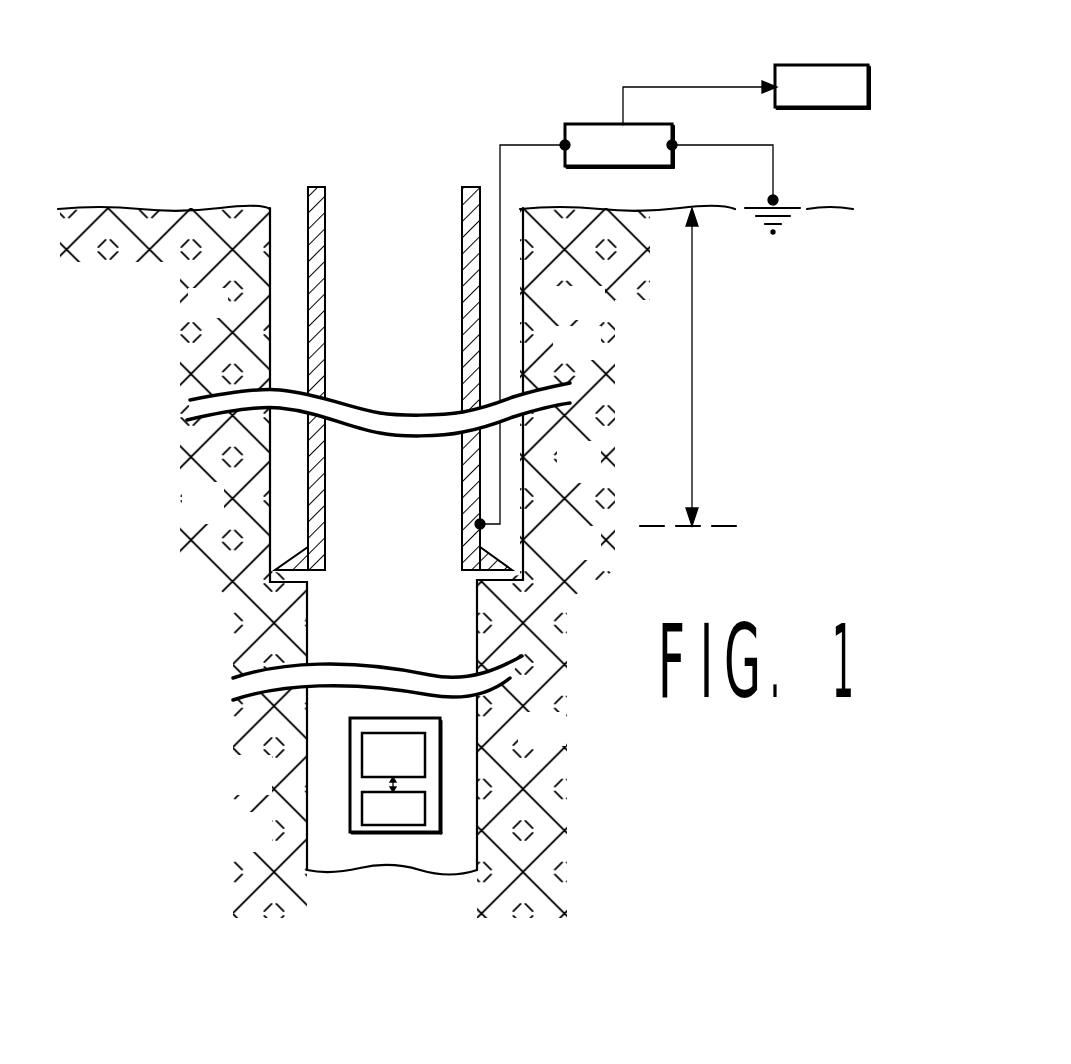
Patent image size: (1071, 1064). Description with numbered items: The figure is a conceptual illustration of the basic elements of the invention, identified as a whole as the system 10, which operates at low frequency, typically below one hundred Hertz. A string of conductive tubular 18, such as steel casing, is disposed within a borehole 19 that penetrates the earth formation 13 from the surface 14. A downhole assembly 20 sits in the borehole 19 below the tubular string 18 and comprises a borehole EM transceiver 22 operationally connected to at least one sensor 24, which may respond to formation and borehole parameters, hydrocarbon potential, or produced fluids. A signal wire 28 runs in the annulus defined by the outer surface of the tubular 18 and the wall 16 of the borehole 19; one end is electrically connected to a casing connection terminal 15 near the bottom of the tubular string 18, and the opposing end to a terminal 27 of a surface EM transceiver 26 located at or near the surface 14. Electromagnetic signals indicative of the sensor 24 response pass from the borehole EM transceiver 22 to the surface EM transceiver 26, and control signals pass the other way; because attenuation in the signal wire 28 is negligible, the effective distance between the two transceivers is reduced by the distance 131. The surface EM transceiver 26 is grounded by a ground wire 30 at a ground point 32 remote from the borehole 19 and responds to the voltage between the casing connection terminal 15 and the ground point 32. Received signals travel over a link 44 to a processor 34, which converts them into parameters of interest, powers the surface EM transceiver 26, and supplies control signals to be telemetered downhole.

The system 10 is at (572, 83).
The earth formation 13 is at (218, 519).
The surface 14 is at (155, 208).
The casing connection terminal 15 is at (487, 528).
The wall of the borehole 16 is at (272, 240).
The tubular string 18 is at (308, 320).
The borehole 19 is at (298, 469).
The downhole assembly 20 is at (393, 781).
The borehole EM transceiver 22 is at (362, 752).
The sensor 24 is at (362, 806).
The surface EM transceiver 26 is at (655, 125).
The terminal of the surface EM transceiver 27 is at (565, 145).
The signal wire 28 is at (500, 318).
The ground wire 30 is at (750, 145).
The ground point 32 is at (778, 200).
The processor 34 is at (832, 65).
The link 44 is at (660, 87).
The distance 131 is at (697, 360).